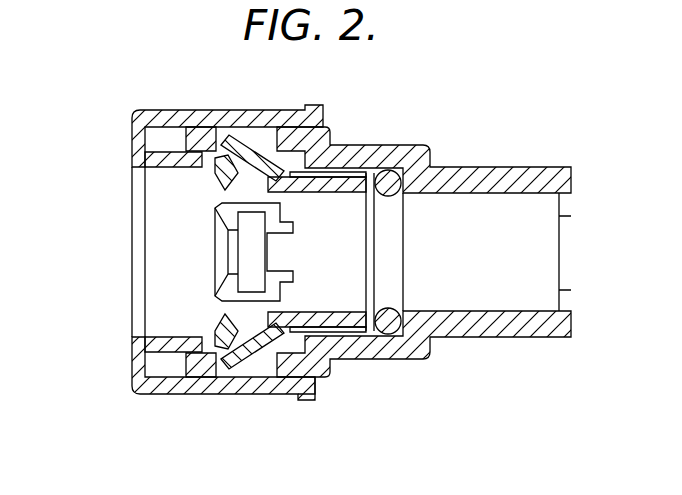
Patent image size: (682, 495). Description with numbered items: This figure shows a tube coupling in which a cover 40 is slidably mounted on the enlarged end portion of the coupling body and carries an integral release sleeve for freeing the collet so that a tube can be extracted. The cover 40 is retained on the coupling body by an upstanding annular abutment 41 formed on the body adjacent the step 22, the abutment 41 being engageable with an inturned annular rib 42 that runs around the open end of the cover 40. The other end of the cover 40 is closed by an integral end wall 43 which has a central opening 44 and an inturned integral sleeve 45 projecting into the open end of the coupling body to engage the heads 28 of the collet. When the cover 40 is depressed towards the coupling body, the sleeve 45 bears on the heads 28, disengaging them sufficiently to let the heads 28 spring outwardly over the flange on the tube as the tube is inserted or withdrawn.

The step 22 is at (325, 358).
The heads 28 is at (214, 132).
The cover 40 is at (167, 396).
The upstanding annular abutment 41 is at (296, 396).
The inturned annular rib 42 is at (331, 392).
The integral end wall 43 is at (131, 124).
The central opening 44 is at (128, 258).
The inturned integral sleeve 45 is at (145, 167).